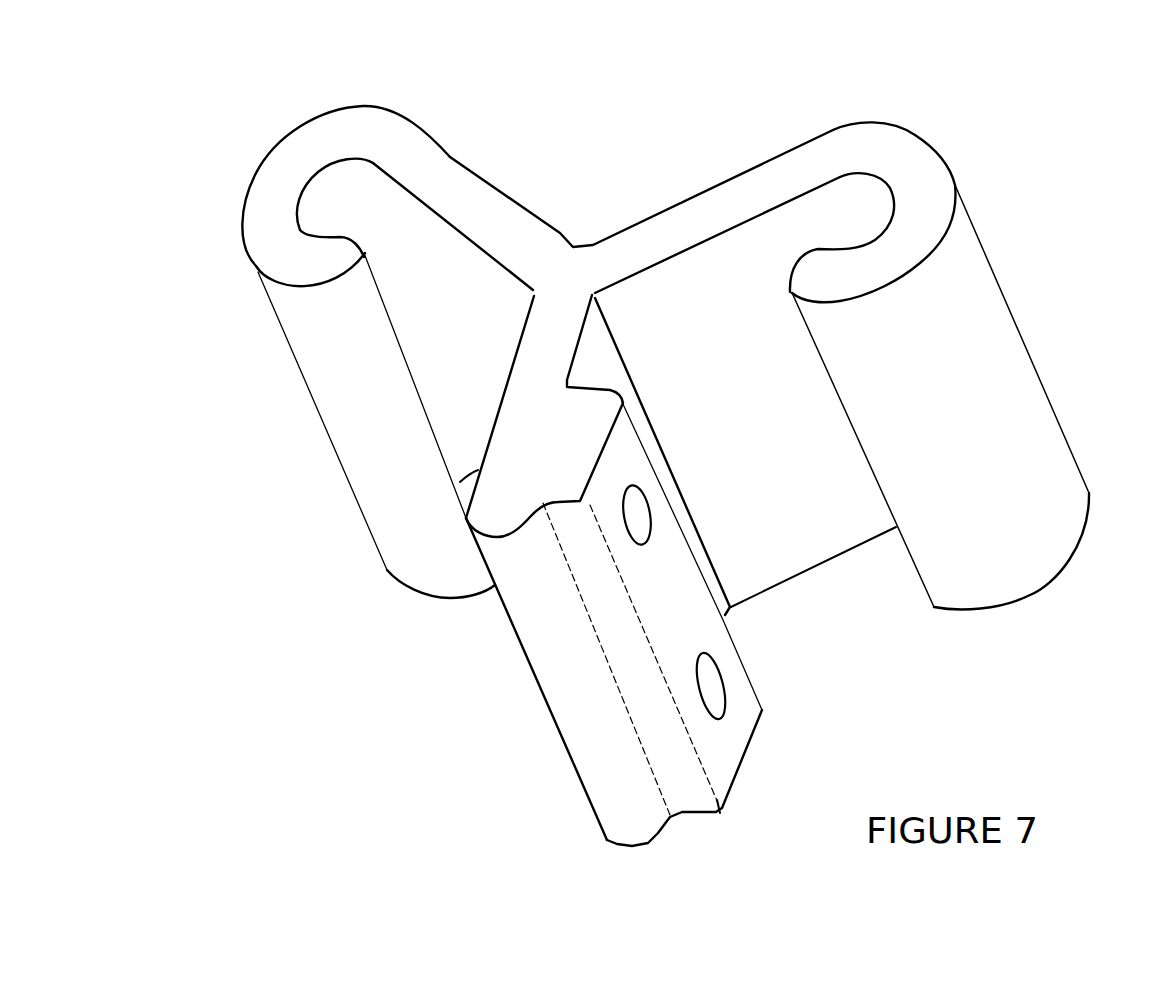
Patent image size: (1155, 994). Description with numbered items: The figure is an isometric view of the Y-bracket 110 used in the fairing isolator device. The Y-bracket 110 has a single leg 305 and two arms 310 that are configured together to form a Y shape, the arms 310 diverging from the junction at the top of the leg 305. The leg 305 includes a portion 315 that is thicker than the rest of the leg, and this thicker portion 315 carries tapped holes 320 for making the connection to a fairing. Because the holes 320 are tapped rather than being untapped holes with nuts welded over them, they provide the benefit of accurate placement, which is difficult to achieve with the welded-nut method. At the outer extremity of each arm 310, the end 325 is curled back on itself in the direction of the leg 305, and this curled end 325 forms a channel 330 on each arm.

The Y-bracket 110 is at (1075, 110).
The leg 305 is at (540, 705).
The arm 310 is at (453, 153).
The portion 315 is at (757, 740).
The tapped holes 320 is at (627, 548).
The end 325 is at (280, 242).
The channel 330 is at (327, 193).